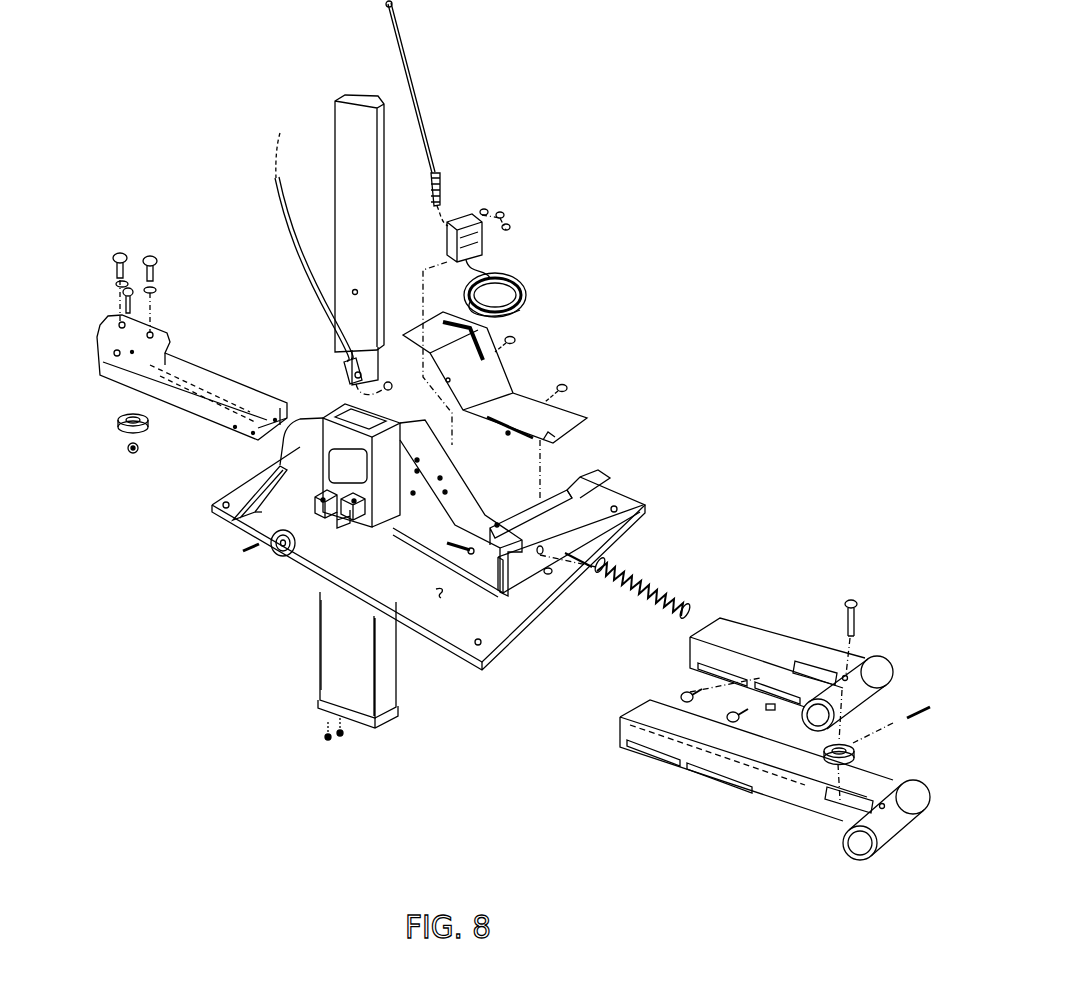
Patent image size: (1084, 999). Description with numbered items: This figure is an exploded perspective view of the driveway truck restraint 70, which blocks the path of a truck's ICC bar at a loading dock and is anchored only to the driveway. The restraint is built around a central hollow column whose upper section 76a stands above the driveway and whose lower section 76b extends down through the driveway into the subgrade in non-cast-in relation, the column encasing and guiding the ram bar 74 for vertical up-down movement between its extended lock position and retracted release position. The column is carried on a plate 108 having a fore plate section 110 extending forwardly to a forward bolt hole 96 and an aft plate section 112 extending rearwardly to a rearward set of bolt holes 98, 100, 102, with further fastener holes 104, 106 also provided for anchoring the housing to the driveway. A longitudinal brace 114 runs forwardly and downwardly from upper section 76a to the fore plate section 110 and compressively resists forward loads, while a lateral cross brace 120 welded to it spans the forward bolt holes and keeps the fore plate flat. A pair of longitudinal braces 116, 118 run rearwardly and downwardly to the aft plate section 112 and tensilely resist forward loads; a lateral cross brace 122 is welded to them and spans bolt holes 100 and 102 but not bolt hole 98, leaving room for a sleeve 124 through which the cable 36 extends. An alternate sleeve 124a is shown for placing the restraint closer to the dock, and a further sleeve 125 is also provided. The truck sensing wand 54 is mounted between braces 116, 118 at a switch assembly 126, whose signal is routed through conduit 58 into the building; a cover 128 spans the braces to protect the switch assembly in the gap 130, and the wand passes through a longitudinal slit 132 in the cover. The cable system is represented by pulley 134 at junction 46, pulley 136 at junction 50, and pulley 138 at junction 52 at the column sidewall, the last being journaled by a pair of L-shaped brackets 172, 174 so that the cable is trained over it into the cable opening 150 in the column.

The cable 36 is at (276, 190).
The junction 46 is at (845, 828).
The junction 50 is at (114, 368).
The junction 52 is at (334, 528).
The truck sensing wand 54 is at (405, 49).
The conduit 58 is at (631, 583).
The driveway truck restraint 70 is at (135, 503).
The ram bar 74 is at (343, 192).
The upper section of central hollow column 76a is at (327, 442).
The lower section of central hollow column 76b is at (318, 630).
The bolt hole 96 is at (224, 506).
The bolt hole 98 is at (479, 646).
The bolt hole 100 is at (551, 575).
The bolt hole 102 is at (617, 509).
The bolt hole 104 is at (550, 495).
The bolt hole 106 is at (441, 594).
The plate 108 is at (348, 598).
The fore plate section 110 is at (263, 471).
The aft plate section 112 is at (519, 622).
The brace 114 is at (306, 412).
The brace 116 is at (425, 528).
The brace 118 is at (453, 508).
The lateral cross brace 120 is at (250, 497).
The lateral cross brace 122 is at (575, 483).
The sleeve 124 is at (625, 715).
The alternate sleeve 124a is at (778, 605).
The sleeve 125 is at (199, 370).
The switch assembly 126 is at (483, 212).
The cover 128 is at (500, 378).
The gap 130 is at (447, 489).
The longitudinal slit 132 is at (470, 337).
The pulley 134 is at (823, 756).
The pulley 136 is at (126, 434).
The pulley 138 is at (278, 560).
The cable opening 150 is at (338, 488).
The L-shaped bracket 172 is at (316, 507).
The L-shaped bracket 174 is at (360, 499).